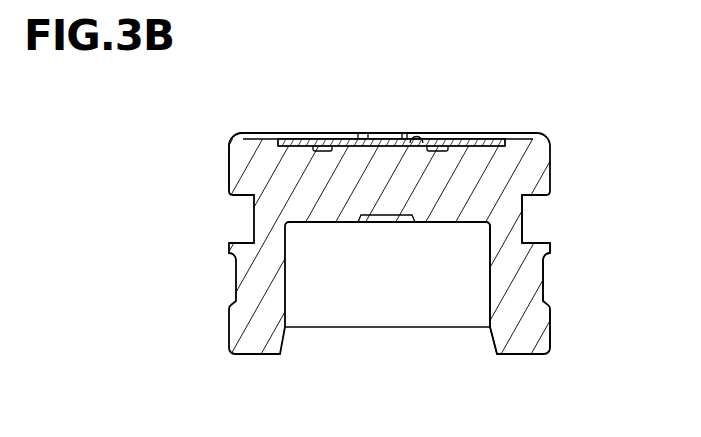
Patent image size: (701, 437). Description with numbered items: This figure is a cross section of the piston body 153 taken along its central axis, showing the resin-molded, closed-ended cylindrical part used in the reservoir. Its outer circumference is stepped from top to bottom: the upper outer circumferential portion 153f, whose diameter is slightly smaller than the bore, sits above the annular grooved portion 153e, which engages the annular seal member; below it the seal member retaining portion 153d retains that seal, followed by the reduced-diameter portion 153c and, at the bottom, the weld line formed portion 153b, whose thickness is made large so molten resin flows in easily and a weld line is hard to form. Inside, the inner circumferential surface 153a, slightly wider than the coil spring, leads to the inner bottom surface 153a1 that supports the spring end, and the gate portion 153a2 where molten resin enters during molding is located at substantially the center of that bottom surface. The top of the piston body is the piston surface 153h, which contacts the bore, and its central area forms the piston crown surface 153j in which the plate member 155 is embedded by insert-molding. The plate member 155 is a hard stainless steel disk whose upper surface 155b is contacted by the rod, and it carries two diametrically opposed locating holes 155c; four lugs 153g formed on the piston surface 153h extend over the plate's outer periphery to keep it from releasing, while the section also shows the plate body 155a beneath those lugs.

The piston body 153 is at (572, 128).
The inner circumferential surface 153a is at (490, 290).
The inner bottom surface 153a1 is at (495, 230).
The gate portion 153a2 is at (380, 221).
The weld line formed portion 153b is at (550, 320).
The reduced-diameter portion 153c is at (550, 276).
The seal member retaining portion 153d is at (550, 249).
The annular grooved portion 153e is at (523, 215).
The upper outer circumferential portion 153f is at (228, 176).
The lug 153g is at (283, 130).
The piston surface 153h is at (267, 130).
The piston crown surface 153j is at (420, 148).
The plate member 155 is at (296, 148).
The plate body 155a is at (482, 152).
The upper surface 155b is at (358, 137).
The locating hole 155c is at (320, 138).